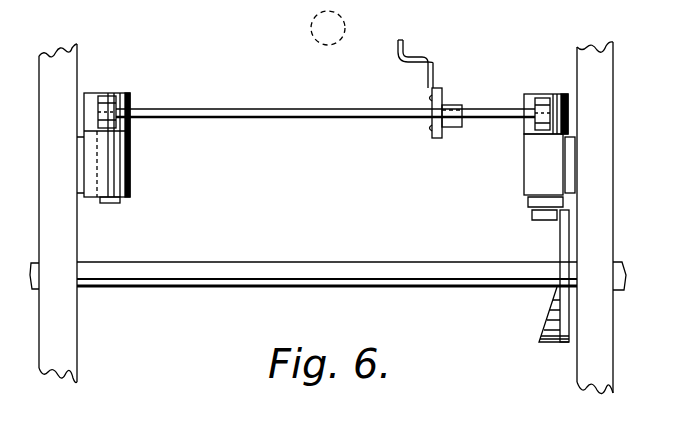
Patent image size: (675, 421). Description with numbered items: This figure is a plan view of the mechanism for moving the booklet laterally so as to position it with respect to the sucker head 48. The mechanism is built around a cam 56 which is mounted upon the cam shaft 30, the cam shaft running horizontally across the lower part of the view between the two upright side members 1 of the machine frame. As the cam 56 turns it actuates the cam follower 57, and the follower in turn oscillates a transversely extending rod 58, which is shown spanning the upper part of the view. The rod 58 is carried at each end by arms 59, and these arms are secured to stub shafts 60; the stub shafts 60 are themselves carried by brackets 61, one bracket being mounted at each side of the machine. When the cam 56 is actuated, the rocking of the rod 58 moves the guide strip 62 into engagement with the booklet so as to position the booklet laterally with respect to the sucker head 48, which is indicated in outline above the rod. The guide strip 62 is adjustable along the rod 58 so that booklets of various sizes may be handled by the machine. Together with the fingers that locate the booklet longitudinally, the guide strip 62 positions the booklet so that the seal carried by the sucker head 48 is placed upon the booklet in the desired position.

The post 1 is at (42, 350).
The cam shaft 30 is at (379, 262).
The sucker head 48 is at (311, 30).
The cam 56 is at (560, 243).
The cam follower 57 is at (530, 215).
The rod 58 is at (366, 104).
The arms 59 is at (134, 106).
The stub shafts 60 is at (122, 199).
The brackets 61 is at (130, 160).
The guide strip 62 is at (437, 65).